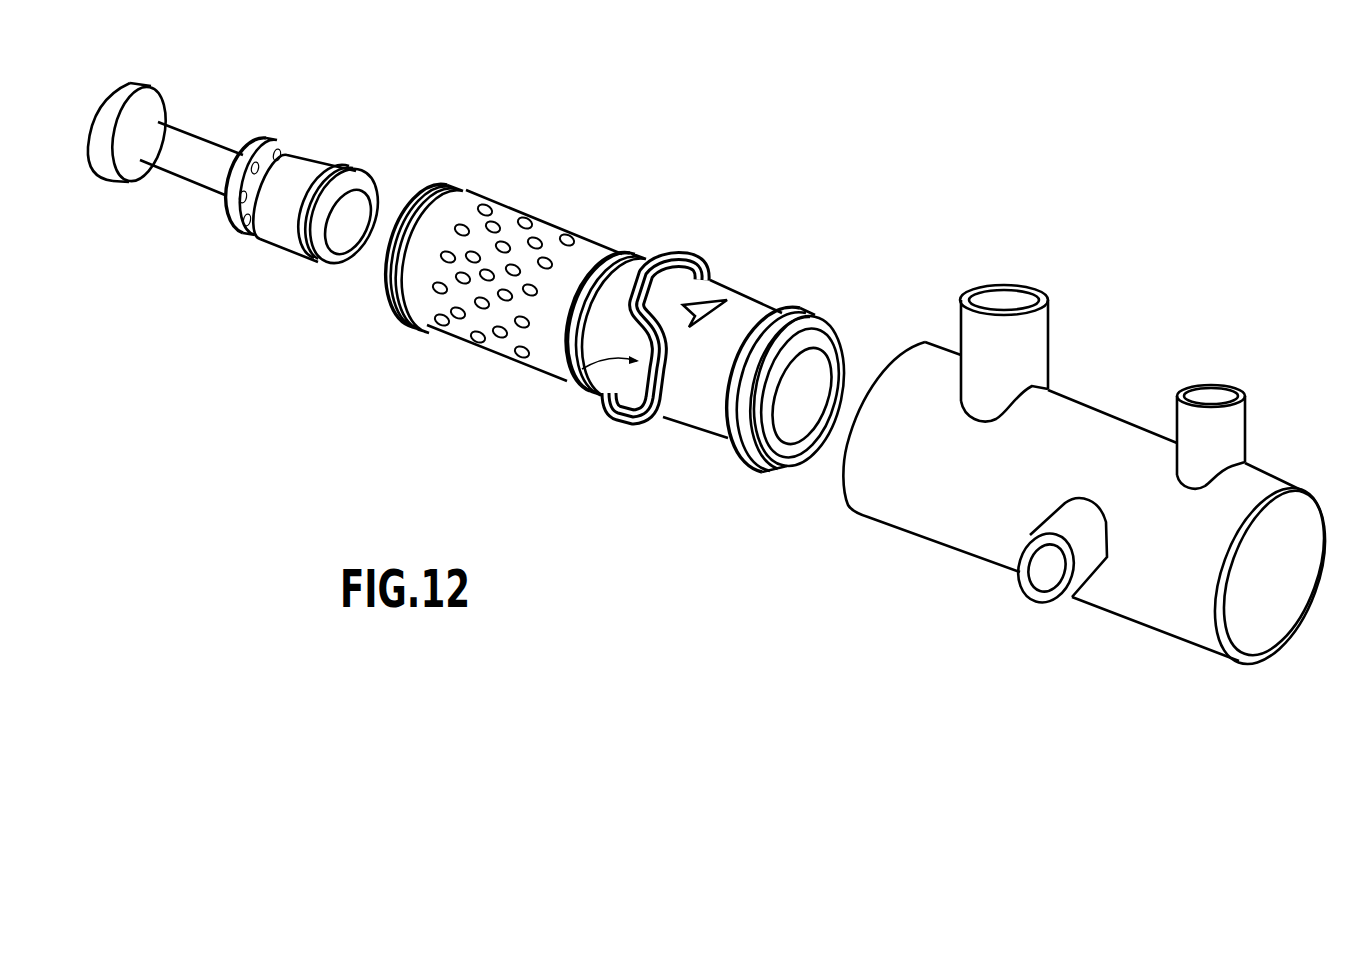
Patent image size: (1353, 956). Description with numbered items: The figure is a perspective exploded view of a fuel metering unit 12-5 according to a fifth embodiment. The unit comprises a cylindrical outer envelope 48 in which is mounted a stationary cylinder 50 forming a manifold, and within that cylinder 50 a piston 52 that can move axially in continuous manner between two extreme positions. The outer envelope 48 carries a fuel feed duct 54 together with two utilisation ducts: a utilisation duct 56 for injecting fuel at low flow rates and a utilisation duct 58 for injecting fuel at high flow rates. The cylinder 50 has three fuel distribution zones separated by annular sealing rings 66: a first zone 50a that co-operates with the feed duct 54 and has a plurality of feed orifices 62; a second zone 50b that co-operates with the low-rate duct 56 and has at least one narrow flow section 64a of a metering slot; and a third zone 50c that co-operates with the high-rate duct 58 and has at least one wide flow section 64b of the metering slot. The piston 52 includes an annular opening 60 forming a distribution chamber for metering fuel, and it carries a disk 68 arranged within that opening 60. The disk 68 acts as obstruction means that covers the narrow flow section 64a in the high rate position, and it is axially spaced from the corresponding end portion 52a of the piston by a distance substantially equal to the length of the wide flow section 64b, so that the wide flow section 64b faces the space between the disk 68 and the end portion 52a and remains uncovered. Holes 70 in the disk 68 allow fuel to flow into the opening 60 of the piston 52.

The fuel metering unit 12-5 is at (405, 376).
The cylindrical outer envelope 48 is at (913, 490).
The cylinder 50 is at (690, 400).
The first zone 50a is at (555, 208).
The second zone 50b is at (586, 411).
The third zone 50c is at (757, 285).
The piston 52 is at (93, 162).
The end portion of the piston 52a is at (350, 176).
The fuel feed duct 54 is at (1030, 345).
The utilisation duct for low flow rates 56 is at (1082, 558).
The utilisation duct for high flow rates 58 is at (1235, 430).
The annular opening 60 is at (192, 121).
The feed orifices 62 is at (480, 305).
The narrow flow section 64a is at (567, 374).
The wide flow section 64b is at (688, 327).
The annular sealing rings 66 is at (450, 183).
The disk 68 is at (227, 203).
The holes 70 is at (268, 169).